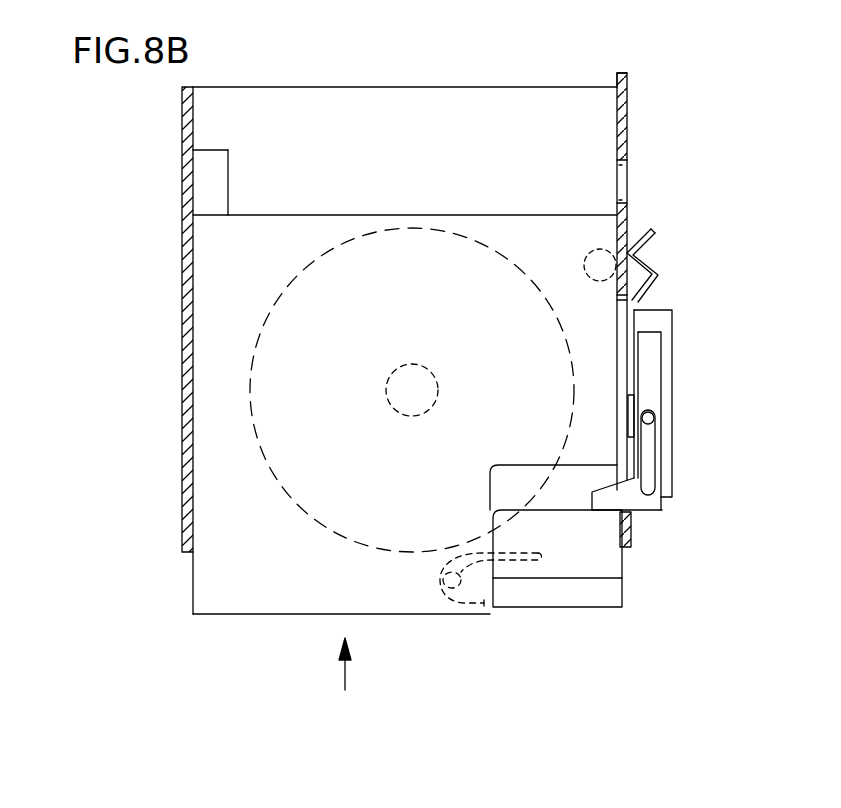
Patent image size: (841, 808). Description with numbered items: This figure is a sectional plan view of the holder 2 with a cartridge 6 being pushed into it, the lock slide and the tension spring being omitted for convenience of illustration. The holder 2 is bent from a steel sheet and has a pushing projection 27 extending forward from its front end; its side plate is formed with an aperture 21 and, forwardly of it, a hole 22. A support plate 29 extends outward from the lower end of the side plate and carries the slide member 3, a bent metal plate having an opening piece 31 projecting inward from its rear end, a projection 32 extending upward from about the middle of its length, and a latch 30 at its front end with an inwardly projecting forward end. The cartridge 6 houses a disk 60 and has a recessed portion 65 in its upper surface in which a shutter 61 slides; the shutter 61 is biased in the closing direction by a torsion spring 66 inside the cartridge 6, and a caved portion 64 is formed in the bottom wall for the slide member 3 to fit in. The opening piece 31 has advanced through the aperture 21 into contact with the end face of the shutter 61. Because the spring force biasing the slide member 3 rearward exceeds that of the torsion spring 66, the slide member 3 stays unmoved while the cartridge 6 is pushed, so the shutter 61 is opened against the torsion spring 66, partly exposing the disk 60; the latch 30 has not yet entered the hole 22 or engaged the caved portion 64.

The holder 2 is at (622, 128).
The slide member 3 is at (648, 376).
The cartridge 6 is at (490, 228).
The aperture 21 is at (618, 299).
The hole 22 is at (628, 178).
The pushing projection 27 is at (628, 74).
The support plate 29 is at (663, 324).
The latch 30 is at (651, 241).
The opening piece 31 is at (624, 501).
The projection 32 is at (633, 413).
The disk 60 is at (357, 236).
The shutter 61 is at (568, 558).
The caved portion 64 is at (596, 249).
The recessed portion 65 is at (528, 589).
The torsion spring 66 is at (462, 604).